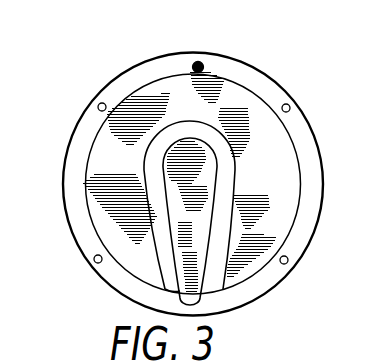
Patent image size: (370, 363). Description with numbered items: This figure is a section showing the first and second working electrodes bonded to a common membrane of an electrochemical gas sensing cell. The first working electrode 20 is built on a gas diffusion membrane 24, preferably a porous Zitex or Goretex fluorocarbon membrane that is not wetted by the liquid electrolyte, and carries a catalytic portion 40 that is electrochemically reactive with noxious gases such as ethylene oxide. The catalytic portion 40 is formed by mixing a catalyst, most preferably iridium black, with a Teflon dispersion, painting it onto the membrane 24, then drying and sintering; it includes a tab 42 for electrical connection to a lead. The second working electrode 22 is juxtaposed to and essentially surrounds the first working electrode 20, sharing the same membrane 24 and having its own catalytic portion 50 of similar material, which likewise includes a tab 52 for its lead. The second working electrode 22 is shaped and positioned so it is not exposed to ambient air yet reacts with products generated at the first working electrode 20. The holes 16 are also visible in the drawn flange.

The mounting hole 16 is at (289, 265).
The first working electrode 20 is at (172, 295).
The second working electrode 22 is at (127, 86).
The gas diffusion membrane 24 is at (82, 143).
The catalytic portion 40 is at (208, 175).
The tab 42 is at (196, 301).
The catalytic portion 50 is at (98, 165).
The tab 52 is at (203, 67).